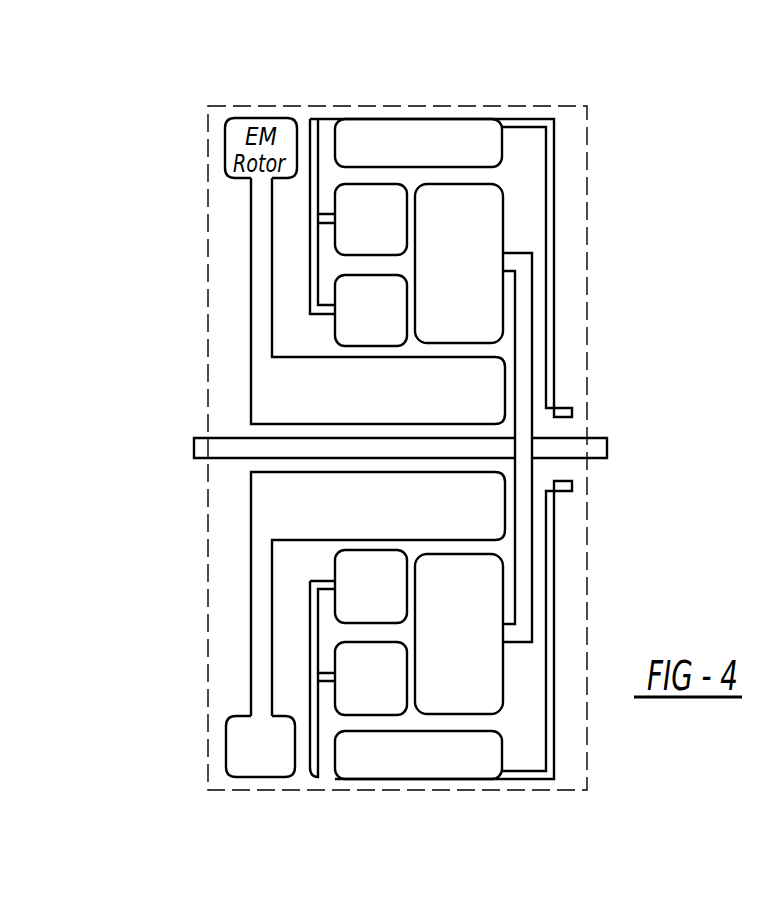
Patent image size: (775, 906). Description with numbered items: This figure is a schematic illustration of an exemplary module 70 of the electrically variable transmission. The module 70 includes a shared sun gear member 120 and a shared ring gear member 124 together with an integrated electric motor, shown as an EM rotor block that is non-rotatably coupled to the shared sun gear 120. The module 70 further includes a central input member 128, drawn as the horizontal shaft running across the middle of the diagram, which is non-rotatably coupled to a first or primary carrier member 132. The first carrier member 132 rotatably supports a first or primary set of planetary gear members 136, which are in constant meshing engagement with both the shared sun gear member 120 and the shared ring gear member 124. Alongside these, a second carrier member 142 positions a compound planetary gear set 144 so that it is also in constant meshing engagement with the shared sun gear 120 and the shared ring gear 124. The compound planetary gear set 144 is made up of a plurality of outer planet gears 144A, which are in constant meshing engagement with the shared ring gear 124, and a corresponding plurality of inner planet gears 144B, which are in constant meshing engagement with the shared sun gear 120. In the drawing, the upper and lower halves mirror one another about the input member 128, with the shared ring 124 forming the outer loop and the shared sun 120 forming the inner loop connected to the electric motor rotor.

The module 70 is at (458, 66).
The shared sun gear member 120 is at (275, 392).
The shared ring gear member 124 is at (487, 130).
The central input member 128 is at (207, 448).
The first carrier member 132 is at (523, 347).
The first set of planetary gear members 136 is at (485, 222).
The second carrier member 142 is at (316, 127).
The compound planetary gear set 144 is at (250, 449).
The outer planet gears 144A is at (345, 237).
The inner planet gears 144B is at (355, 326).